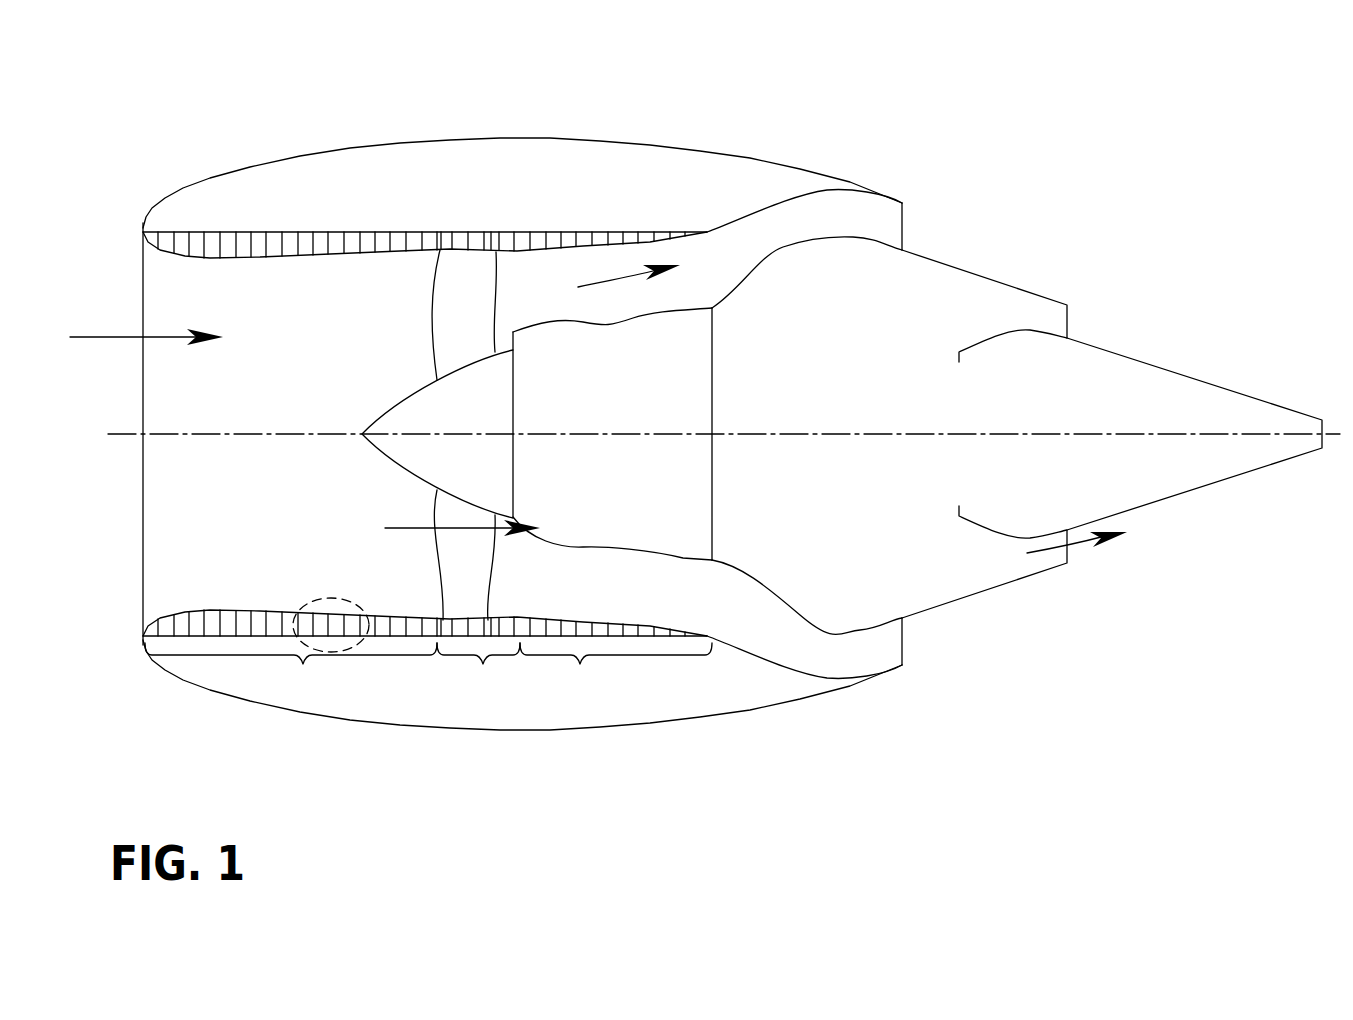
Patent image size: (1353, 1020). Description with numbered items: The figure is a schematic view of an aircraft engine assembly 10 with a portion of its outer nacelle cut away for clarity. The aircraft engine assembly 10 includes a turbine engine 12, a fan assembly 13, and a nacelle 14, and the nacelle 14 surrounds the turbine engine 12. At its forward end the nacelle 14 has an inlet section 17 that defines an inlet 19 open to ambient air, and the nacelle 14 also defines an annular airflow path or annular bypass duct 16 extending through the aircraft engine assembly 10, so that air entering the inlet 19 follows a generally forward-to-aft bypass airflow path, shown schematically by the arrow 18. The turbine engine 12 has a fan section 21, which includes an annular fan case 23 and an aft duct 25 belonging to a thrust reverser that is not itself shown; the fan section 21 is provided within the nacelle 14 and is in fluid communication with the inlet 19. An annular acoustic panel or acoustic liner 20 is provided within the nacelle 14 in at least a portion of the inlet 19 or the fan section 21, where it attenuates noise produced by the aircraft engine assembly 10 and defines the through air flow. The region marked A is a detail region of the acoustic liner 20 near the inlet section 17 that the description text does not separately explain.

The aircraft engine assembly 10 is at (700, 424).
The turbine engine 12 is at (602, 358).
The fan assembly 13 is at (458, 262).
The nacelle 14 is at (272, 160).
The annular bypass duct 16 is at (520, 281).
The inlet section 17 is at (291, 670).
The bypass airflow path arrow 18 is at (620, 277).
The inlet 19 is at (175, 483).
The acoustic liner 20 is at (202, 232).
The fan section 21 is at (530, 678).
The annular fan case 23 is at (478, 672).
The aft duct 25 is at (616, 672).
The detail region A is at (297, 615).